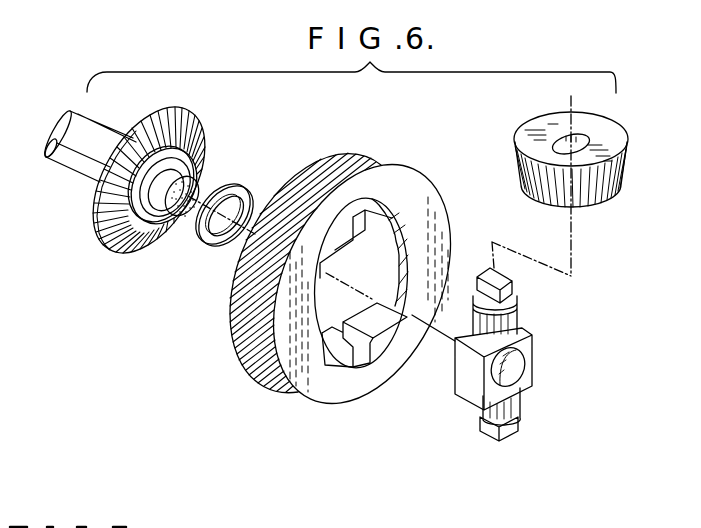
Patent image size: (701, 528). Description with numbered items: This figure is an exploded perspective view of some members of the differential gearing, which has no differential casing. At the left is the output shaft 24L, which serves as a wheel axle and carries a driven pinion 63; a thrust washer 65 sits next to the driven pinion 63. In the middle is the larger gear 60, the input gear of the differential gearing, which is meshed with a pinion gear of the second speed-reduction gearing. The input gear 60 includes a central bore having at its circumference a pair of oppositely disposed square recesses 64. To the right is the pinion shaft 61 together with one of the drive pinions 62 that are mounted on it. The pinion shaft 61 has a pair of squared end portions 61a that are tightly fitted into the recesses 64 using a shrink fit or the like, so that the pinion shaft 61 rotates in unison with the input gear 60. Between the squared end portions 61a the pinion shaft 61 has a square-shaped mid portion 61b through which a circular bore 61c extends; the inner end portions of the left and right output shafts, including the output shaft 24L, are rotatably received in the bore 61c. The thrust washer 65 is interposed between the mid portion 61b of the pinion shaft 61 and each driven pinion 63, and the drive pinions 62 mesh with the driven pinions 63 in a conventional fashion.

The output shaft 24L is at (88, 158).
The driven pinion 63 is at (108, 228).
The thrust washer 65 is at (208, 248).
The larger gear 60 is at (310, 205).
The square recess 64 is at (368, 214).
The drive pinion 62 is at (598, 200).
The pinion shaft 61 is at (517, 313).
The squared end portion 61a is at (512, 292).
The square-shaped mid portion 61b is at (473, 388).
The circular bore 61c is at (532, 375).